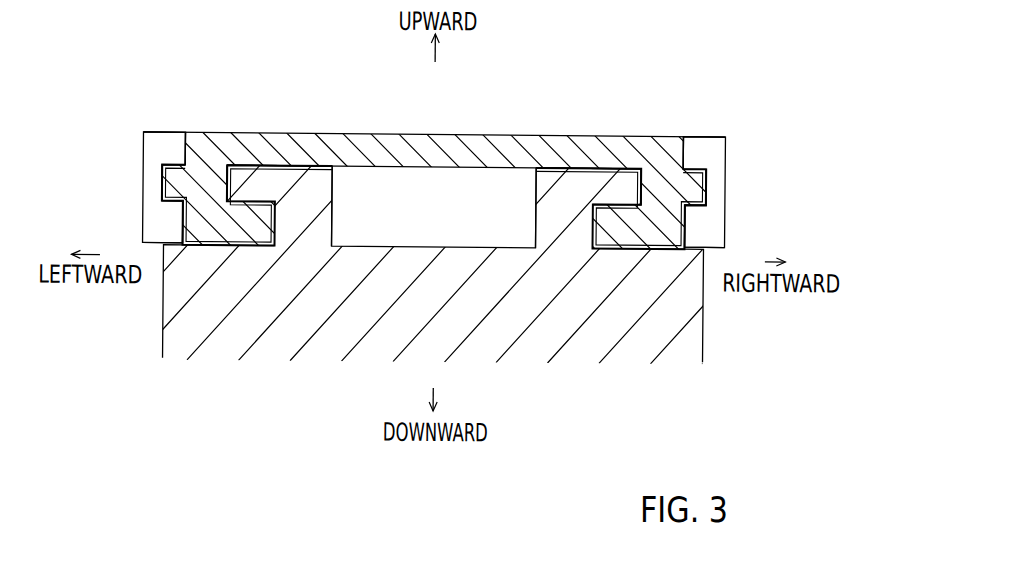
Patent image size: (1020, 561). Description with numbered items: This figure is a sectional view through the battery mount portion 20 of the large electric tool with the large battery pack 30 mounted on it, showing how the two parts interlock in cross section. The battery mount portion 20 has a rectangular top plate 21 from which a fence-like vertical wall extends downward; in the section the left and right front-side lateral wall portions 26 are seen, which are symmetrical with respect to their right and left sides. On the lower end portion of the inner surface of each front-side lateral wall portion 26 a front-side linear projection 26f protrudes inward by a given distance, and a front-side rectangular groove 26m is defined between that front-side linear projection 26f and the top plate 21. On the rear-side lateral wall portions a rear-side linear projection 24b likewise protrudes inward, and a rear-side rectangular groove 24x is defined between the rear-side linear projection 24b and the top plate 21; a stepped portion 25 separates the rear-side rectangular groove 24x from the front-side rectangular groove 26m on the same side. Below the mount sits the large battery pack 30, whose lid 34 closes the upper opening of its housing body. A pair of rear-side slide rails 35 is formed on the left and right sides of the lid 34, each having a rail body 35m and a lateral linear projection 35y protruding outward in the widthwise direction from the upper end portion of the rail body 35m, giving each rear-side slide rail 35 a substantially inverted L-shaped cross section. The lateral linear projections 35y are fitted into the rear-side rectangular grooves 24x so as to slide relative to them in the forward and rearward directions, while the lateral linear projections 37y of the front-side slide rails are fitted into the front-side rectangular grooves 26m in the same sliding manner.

The battery mount portion 20 is at (477, 123).
The top plate 21 is at (432, 134).
The rear-side rectangular groove 24x is at (239, 177).
The rear-side linear projection 24b is at (230, 249).
The stepped portion 25 is at (138, 184).
The front-side lateral wall portion 26 is at (731, 182).
The front-side rectangular groove 26m is at (162, 160).
The front-side linear projection 26f is at (163, 225).
The large battery pack 30 is at (717, 330).
The lid 34 is at (392, 284).
The rear-side slide rail 35 is at (337, 226).
The rail body 35m is at (306, 180).
The lateral linear projection 35y is at (254, 179).
The lateral linear projection 37y is at (172, 184).